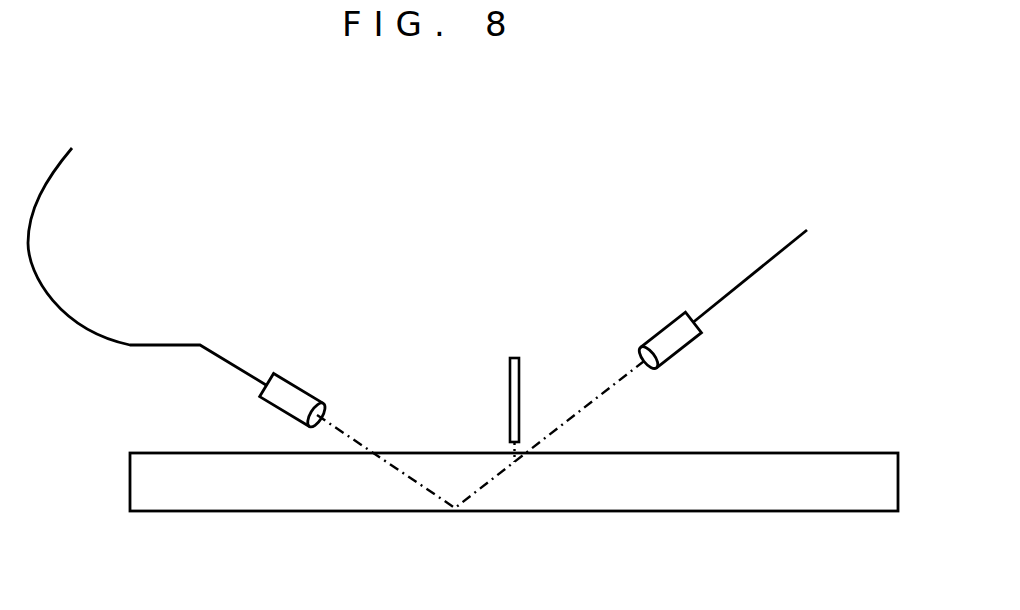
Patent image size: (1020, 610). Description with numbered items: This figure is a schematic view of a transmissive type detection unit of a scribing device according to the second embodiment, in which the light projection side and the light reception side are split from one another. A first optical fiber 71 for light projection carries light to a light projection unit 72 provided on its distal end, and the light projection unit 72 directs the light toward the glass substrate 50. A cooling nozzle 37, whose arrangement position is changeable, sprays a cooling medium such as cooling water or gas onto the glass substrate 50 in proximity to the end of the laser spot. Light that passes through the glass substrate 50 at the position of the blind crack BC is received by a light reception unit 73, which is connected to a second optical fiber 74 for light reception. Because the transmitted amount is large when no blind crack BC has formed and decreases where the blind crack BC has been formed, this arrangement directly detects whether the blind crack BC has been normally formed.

The glass substrate 50 is at (781, 470).
The optical fiber 71 is at (143, 343).
The light projection unit 72 is at (297, 386).
The cooling nozzle 37 is at (513, 357).
The light reception unit 73 is at (660, 325).
The second optical fiber 74 is at (737, 285).
The beam reflection point BC is at (517, 459).